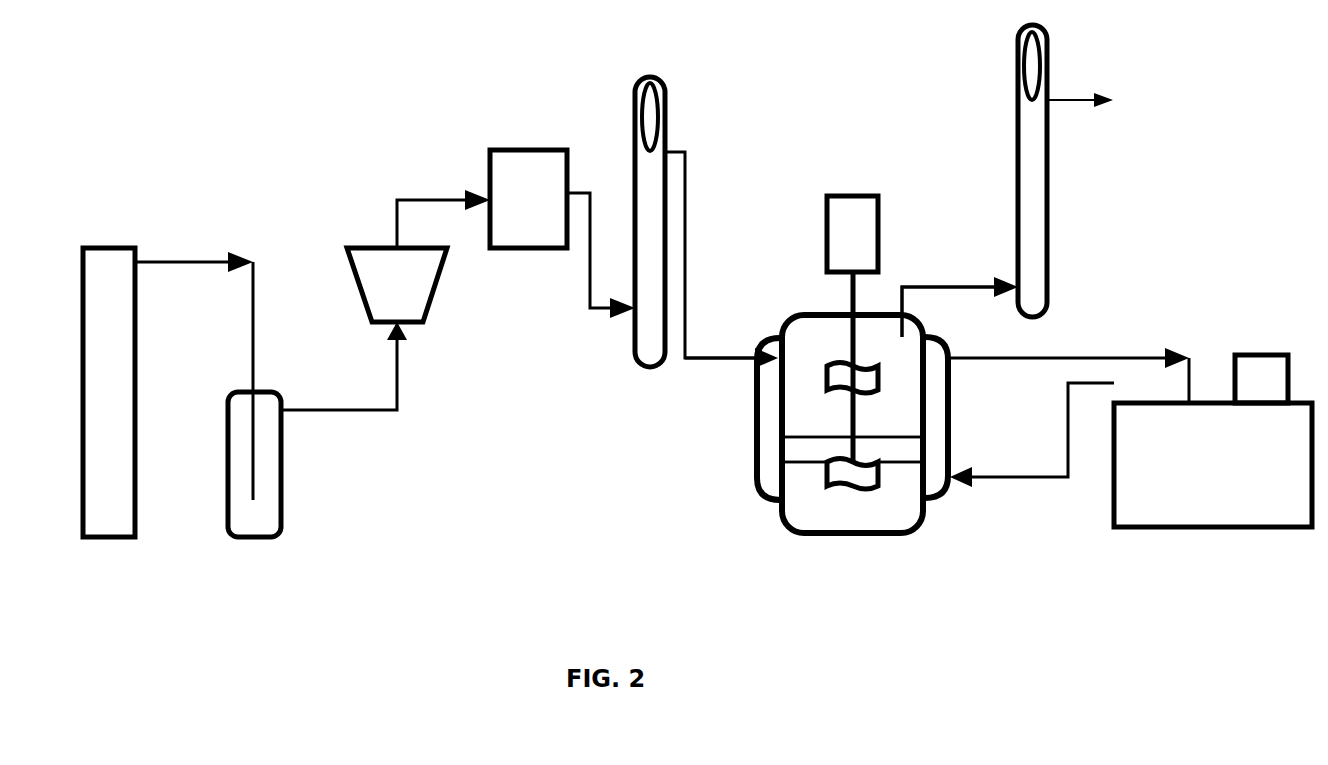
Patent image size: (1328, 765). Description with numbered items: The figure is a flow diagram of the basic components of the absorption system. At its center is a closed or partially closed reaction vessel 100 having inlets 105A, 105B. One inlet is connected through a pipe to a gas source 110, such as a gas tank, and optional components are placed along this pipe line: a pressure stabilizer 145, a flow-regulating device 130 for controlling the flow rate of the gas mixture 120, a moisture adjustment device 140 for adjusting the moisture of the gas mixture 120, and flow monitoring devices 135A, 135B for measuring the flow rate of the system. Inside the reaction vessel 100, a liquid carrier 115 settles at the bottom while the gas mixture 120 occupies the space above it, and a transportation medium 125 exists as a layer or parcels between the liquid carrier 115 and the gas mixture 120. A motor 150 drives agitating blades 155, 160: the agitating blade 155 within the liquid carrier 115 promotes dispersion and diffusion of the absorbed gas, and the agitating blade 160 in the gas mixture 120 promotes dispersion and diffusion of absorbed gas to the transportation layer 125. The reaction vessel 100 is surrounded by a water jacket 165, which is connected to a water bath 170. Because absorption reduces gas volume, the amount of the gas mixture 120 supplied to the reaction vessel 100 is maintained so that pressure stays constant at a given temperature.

The reaction vessel 100 is at (852, 446).
The inlet 105A is at (758, 354).
The inlet 105B is at (910, 330).
The gas source 110 is at (86, 392).
The liquid carrier 115 is at (805, 505).
The gas mixture 120 is at (803, 388).
The transportation medium 125 is at (805, 456).
The flow-regulating device 130 is at (373, 285).
The flow monitoring device 135A is at (620, 222).
The flow monitoring device 135B is at (1032, 171).
The moisture adjustment device 140 is at (528, 213).
The pressure stabilizer 145 is at (283, 464).
The motor 150 is at (853, 316).
The agitating blade 155 is at (880, 460).
The agitating blade 160 is at (880, 383).
The water jacket 165 is at (948, 487).
The water bath 170 is at (1213, 466).